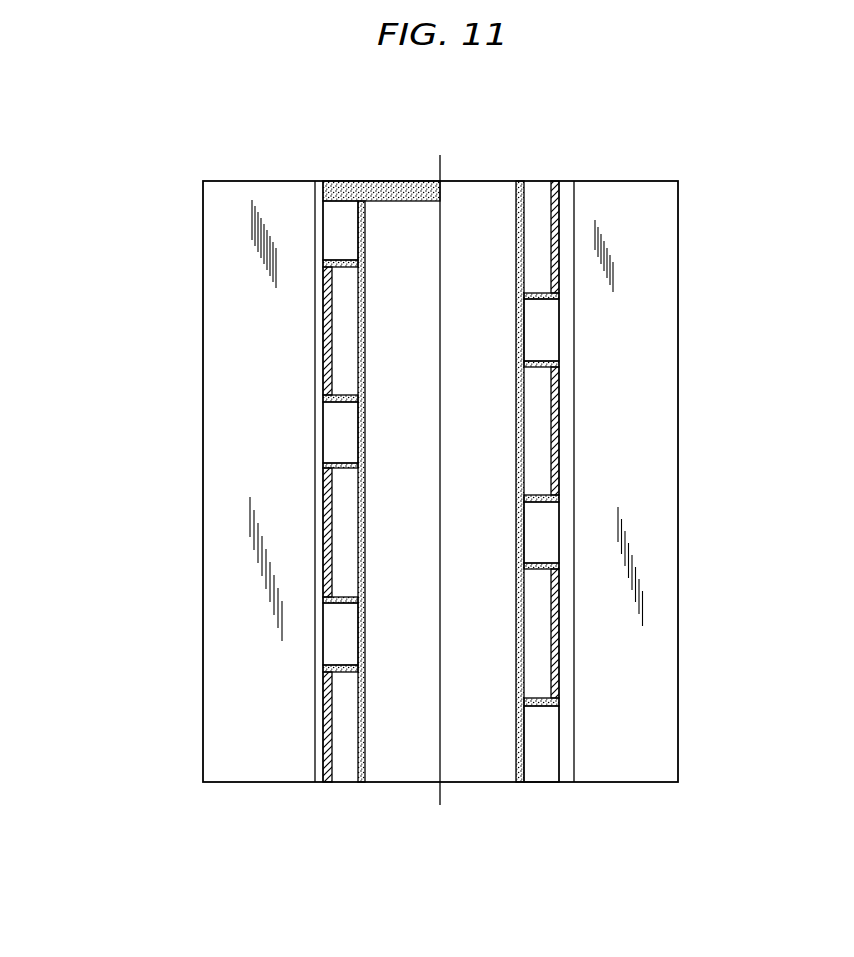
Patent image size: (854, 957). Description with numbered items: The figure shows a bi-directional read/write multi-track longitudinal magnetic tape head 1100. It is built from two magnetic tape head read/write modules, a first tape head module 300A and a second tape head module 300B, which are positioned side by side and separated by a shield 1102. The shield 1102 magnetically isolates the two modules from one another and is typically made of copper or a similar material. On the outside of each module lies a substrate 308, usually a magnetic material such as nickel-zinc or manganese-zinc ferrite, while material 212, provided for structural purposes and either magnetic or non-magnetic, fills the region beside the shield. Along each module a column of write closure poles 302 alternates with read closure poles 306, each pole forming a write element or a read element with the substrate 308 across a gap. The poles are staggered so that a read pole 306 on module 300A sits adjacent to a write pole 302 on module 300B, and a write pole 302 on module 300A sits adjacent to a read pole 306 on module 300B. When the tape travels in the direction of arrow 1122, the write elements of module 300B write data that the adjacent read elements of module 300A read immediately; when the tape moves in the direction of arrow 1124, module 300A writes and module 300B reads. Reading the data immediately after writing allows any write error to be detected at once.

The bi-directional read/write multi-track longitudinal magnetic tape head 1100 is at (172, 418).
The tape head module 300A is at (383, 163).
The tape head module 300B is at (487, 165).
The shield 1102 is at (440, 160).
The substrate 308 is at (271, 380).
The material 212 is at (418, 383).
The write closure pole 302 is at (345, 312).
The read closure pole 306 is at (345, 238).
The arrow 1122 is at (313, 826).
The arrow 1124 is at (438, 868).